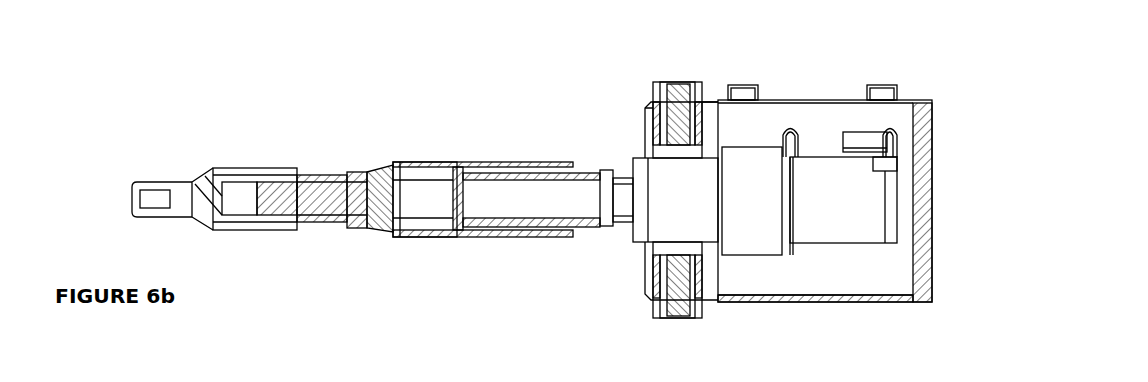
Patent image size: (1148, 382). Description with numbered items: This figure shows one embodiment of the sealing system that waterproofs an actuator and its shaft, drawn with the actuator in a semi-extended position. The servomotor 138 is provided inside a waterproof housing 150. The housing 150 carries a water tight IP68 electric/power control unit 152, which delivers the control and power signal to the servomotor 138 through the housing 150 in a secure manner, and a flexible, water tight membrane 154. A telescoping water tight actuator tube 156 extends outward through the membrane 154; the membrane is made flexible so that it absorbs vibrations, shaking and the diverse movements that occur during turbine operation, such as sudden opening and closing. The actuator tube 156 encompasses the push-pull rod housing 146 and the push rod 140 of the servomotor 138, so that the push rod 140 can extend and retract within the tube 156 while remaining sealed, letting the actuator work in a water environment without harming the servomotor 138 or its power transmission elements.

The servomotor 138 is at (850, 247).
The push rod 140 is at (430, 198).
The push-pull rod housing 146 is at (533, 198).
The waterproof housing 150 is at (773, 255).
The electric/power control unit 152 is at (877, 83).
The flexible and water tight membrane 154 is at (643, 268).
The telescoping water tight actuator tube 156 is at (650, 153).